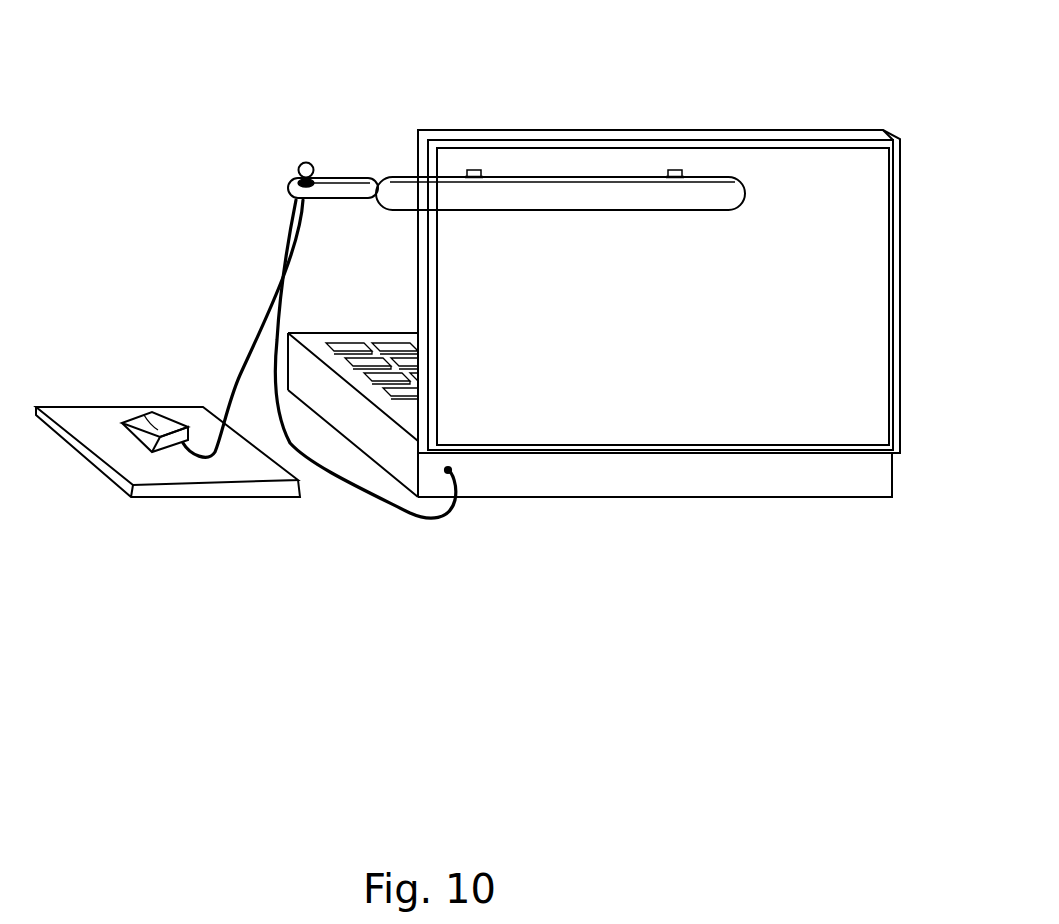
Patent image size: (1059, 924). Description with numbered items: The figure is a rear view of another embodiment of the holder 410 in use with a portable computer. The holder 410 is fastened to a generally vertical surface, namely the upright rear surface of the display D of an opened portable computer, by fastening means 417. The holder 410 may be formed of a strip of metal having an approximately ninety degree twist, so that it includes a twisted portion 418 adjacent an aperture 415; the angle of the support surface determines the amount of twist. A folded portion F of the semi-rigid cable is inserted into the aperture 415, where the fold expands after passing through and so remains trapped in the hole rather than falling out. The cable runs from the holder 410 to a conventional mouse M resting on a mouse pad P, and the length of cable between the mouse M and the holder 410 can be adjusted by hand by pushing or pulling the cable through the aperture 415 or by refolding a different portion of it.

The holder 410 is at (585, 165).
The aperture 415 is at (290, 178).
The fastening means 417 is at (476, 172).
The twisted portion 418 is at (378, 182).
The folded portion of a cable F is at (502, 110).
The display D is at (690, 420).
The mouse M is at (147, 396).
The mouse pad P is at (234, 509).